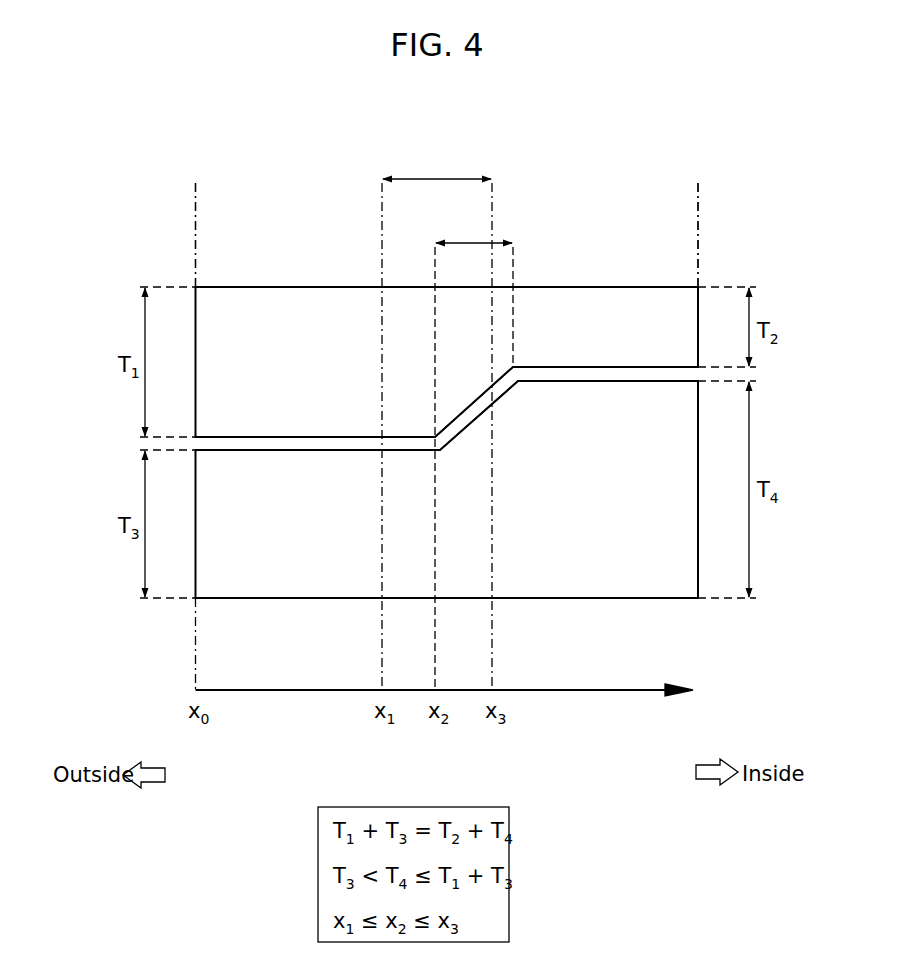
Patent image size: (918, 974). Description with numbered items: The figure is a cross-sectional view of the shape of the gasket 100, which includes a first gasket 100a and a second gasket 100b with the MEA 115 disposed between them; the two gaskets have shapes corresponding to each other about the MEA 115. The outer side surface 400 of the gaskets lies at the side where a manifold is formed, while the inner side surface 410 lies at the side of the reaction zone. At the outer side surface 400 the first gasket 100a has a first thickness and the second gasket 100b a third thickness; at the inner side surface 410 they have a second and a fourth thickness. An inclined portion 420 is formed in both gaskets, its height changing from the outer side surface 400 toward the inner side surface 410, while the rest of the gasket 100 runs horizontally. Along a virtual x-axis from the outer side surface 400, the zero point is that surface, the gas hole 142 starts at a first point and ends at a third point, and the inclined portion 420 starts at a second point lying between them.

The gasket 100 is at (675, 239).
The first gasket 100a is at (556, 304).
The second gasket 100b is at (645, 418).
The MEA 115 is at (282, 445).
The gas hole 142 is at (437, 165).
The outer side surface 400 is at (195, 244).
The inner side surface 410 is at (698, 252).
The inclined portion 420 is at (474, 230).